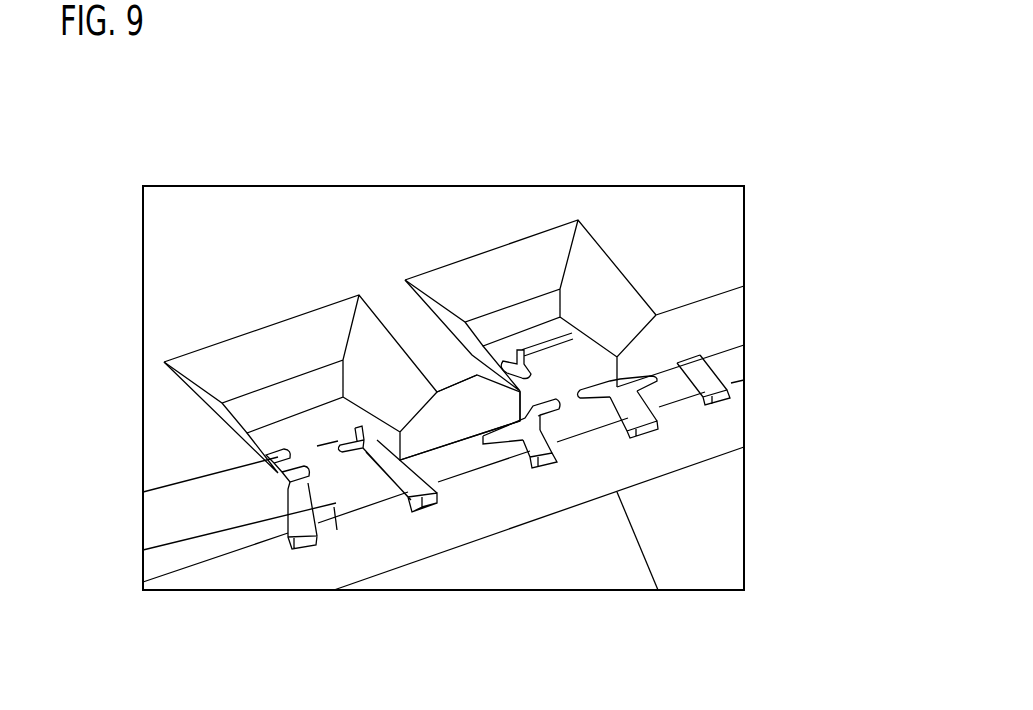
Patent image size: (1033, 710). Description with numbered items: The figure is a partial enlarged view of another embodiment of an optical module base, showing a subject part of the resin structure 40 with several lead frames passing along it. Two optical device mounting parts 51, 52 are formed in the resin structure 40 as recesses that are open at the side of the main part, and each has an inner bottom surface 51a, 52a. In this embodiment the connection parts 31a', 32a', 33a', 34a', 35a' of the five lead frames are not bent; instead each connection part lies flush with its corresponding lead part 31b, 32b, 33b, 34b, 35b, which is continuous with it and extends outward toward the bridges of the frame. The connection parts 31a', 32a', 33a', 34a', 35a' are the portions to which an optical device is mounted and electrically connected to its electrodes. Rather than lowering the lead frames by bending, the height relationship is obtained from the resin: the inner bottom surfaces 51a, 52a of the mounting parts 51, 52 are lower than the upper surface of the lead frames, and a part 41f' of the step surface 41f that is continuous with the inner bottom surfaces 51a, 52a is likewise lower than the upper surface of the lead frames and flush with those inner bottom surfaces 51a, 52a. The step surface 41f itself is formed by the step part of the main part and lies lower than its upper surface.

The resin structure 40 is at (168, 250).
The optical device mounting part 51 is at (253, 317).
The inner bottom surface 51a is at (300, 432).
The optical device mounting part 52 is at (458, 245).
The inner bottom surface 52a is at (538, 354).
The connection part 31a' is at (174, 452).
The lead part 31b is at (283, 518).
The connection part 32a' is at (369, 542).
The lead part 32b is at (415, 483).
The connection part 33a' is at (560, 290).
The lead part 33b is at (535, 438).
The connection part 34a' is at (645, 267).
The lead part 34b is at (632, 406).
The connection part 35a' is at (521, 256).
The lead part 35b is at (700, 372).
The step surface 41f is at (171, 607).
The part of step surface 41f' is at (480, 556).